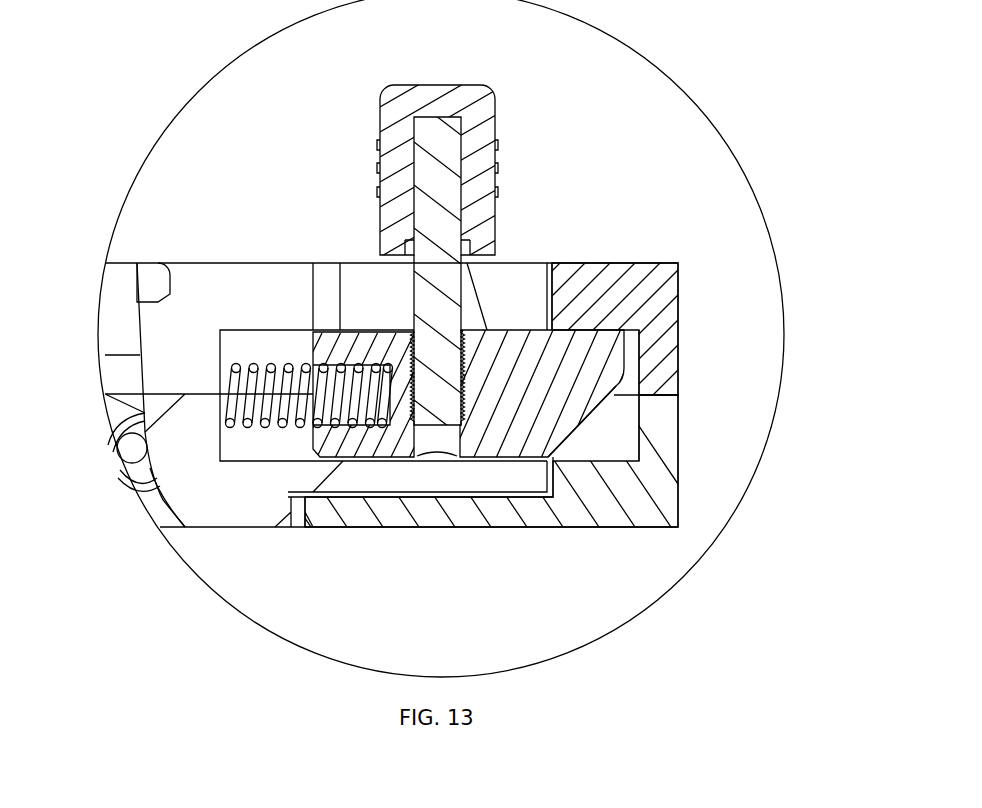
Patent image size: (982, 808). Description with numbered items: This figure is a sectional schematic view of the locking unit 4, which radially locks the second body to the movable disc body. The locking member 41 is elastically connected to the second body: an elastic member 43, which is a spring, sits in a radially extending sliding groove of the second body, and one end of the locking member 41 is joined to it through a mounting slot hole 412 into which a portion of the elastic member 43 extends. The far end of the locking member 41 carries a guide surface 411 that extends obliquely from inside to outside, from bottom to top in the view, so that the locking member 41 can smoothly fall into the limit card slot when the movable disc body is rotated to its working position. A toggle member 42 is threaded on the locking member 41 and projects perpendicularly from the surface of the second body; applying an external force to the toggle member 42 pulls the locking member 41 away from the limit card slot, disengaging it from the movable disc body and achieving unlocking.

The locking unit 4 is at (523, 169).
The locking member 41 is at (579, 358).
The guide surface 411 is at (597, 451).
The mounting slot hole 412 is at (329, 344).
The toggle member 42 is at (467, 303).
The elastic member 43 is at (222, 364).